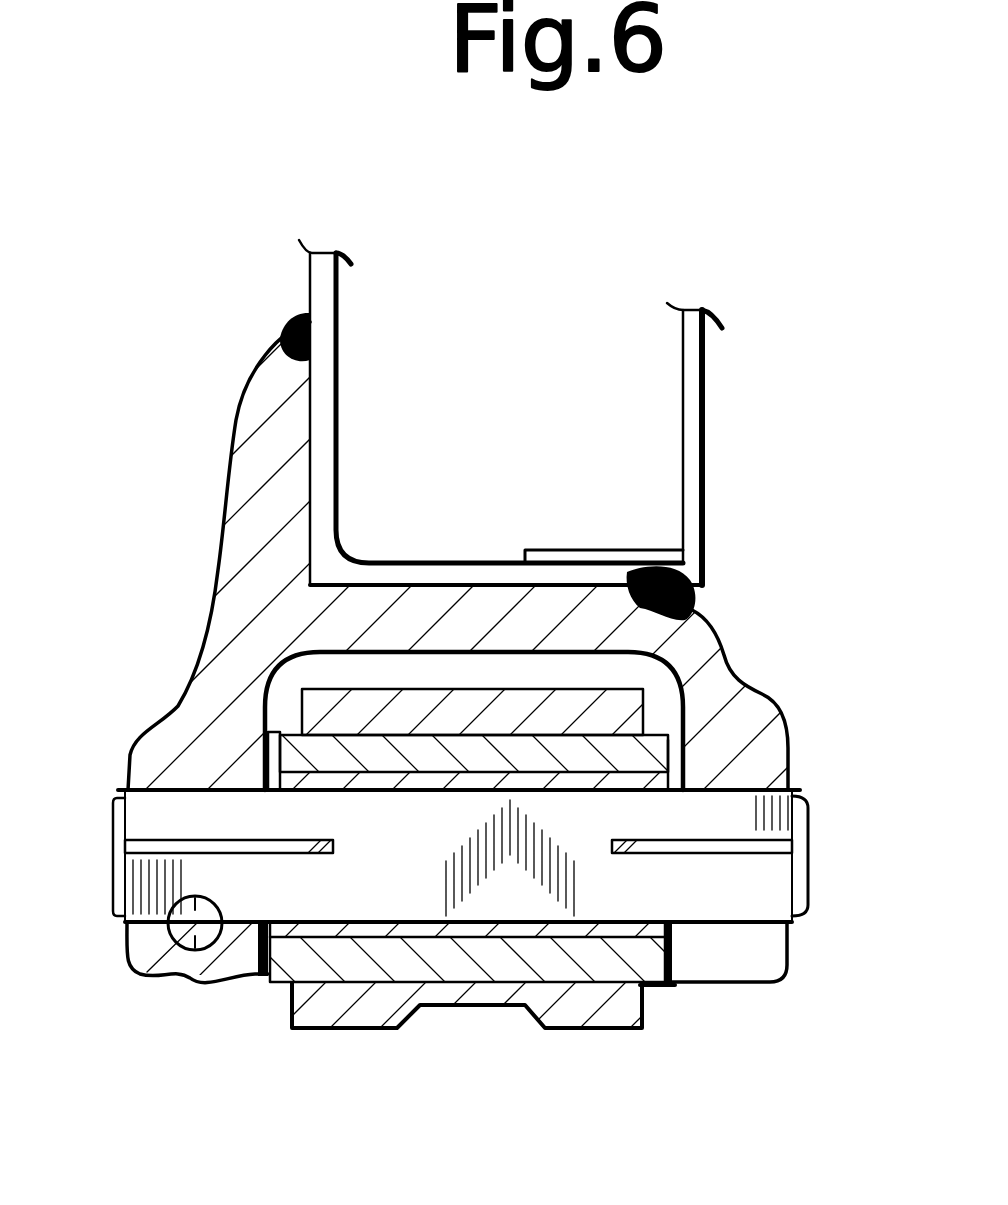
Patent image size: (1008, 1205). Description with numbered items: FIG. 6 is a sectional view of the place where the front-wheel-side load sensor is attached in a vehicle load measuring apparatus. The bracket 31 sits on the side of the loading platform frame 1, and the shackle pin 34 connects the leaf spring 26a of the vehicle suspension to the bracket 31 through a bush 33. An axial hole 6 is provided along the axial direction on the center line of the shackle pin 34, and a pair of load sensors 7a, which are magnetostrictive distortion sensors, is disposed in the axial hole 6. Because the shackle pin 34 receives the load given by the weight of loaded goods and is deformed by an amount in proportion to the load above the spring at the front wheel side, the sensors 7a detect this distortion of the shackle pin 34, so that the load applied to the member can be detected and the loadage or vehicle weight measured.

The loading platform frame 1 is at (334, 388).
The bracket 31 is at (273, 553).
The axial hole 6 is at (182, 838).
The shackle pin 34 is at (750, 884).
The load sensor 7a is at (324, 858).
The bush 33 is at (470, 952).
The leaf spring 26a is at (603, 1008).